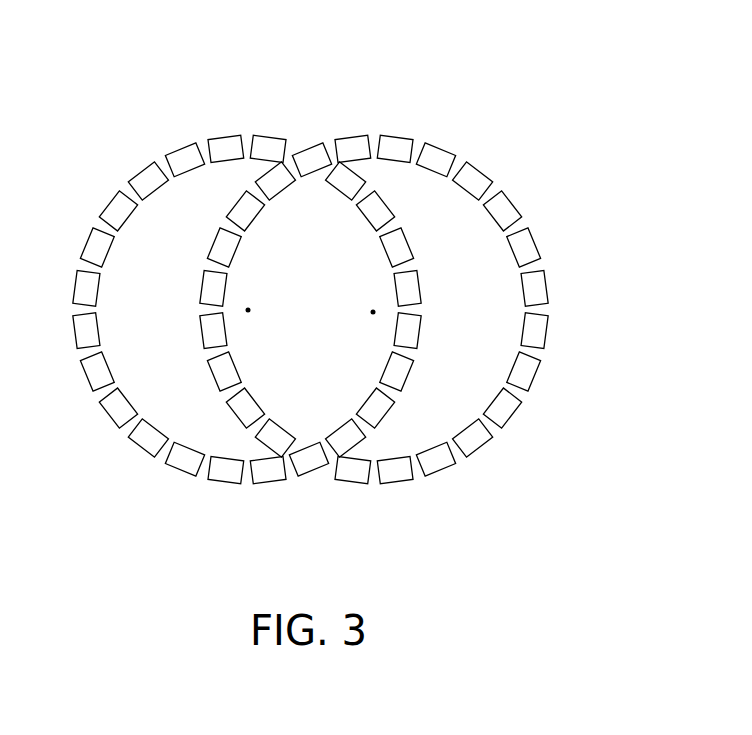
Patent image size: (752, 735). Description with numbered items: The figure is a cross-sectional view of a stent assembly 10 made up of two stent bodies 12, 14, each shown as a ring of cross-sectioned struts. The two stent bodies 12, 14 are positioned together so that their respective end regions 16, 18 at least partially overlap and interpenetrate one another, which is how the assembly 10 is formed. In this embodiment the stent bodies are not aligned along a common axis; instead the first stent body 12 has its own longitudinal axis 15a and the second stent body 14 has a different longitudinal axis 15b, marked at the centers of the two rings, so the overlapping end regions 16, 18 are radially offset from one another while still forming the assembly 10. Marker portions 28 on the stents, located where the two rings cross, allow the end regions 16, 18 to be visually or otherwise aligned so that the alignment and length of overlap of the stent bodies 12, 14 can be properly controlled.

The stent assembly 10 is at (120, 92).
The stent body 12 is at (108, 205).
The stent body 14 is at (553, 290).
The longitudinal axis 15a is at (248, 310).
The longitudinal axis 15b is at (373, 312).
The end region 16 is at (225, 138).
The end region 18 is at (535, 377).
The marker portion 28 is at (312, 148).